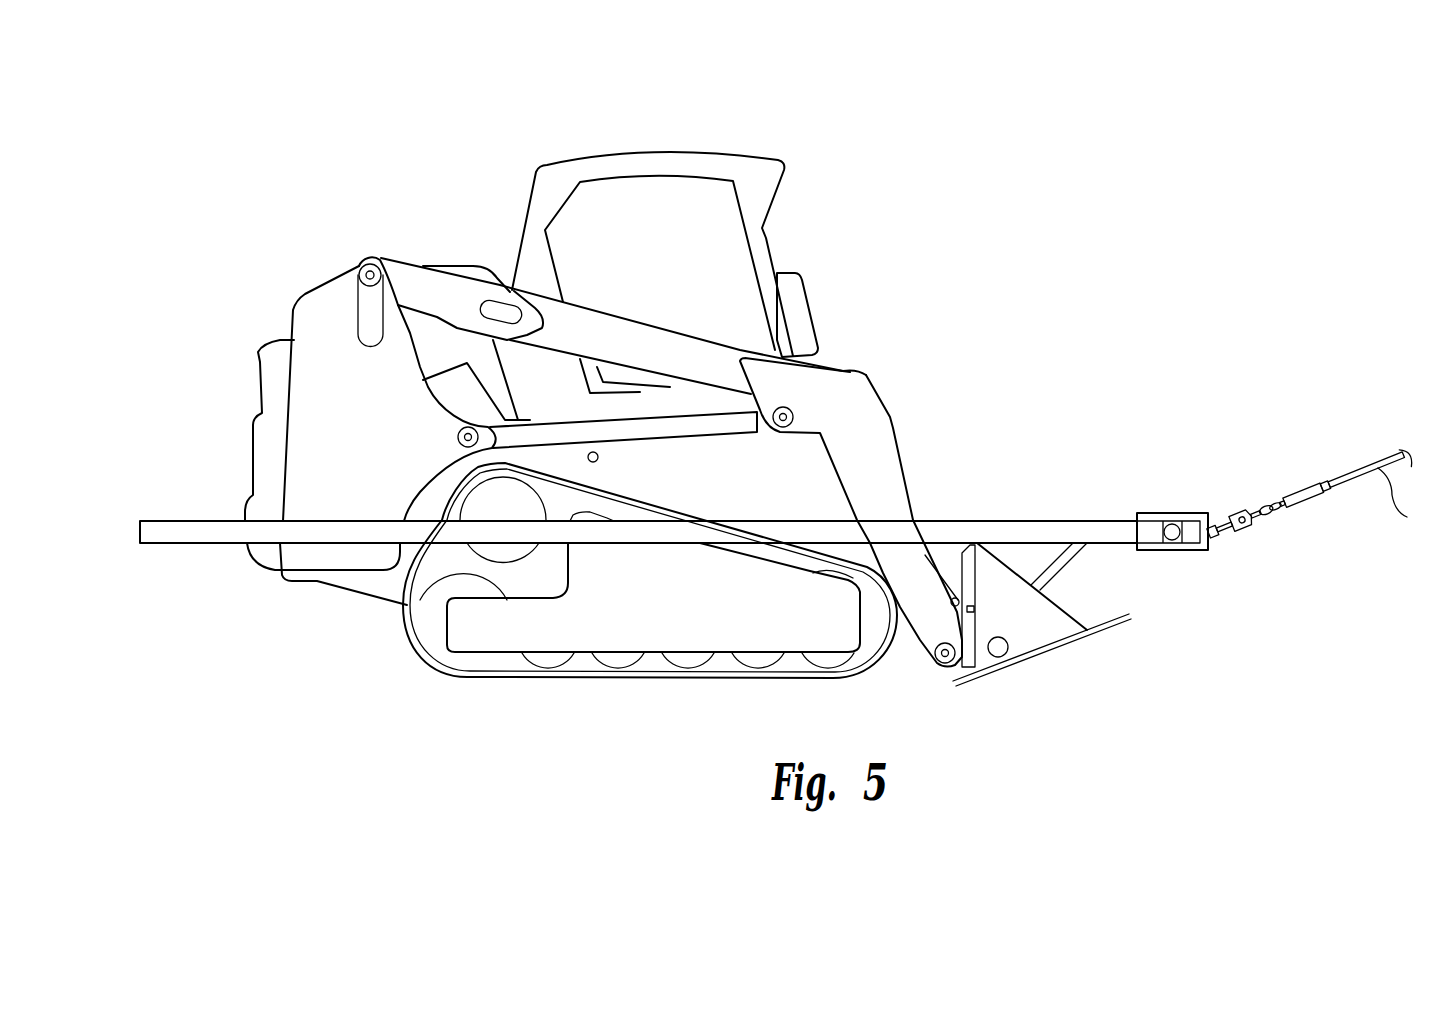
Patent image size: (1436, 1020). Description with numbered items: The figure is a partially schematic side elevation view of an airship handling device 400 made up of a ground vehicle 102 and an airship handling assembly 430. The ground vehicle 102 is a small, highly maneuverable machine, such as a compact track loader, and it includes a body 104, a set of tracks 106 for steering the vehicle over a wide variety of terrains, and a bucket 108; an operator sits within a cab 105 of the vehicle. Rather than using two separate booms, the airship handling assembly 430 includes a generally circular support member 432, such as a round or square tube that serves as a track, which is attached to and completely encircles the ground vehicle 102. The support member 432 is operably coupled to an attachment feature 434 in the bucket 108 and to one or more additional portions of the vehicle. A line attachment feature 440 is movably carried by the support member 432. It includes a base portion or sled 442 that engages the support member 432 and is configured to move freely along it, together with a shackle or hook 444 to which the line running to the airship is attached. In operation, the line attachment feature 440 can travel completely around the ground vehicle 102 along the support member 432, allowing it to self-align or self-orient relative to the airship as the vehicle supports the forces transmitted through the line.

The airship handling device 400 is at (1141, 122).
The ground vehicle 102 is at (262, 306).
The body 104 is at (312, 432).
The cab 105 is at (782, 195).
The set of tracks 106 is at (627, 673).
The bucket 108 is at (1047, 627).
The airship handling assembly 430 is at (1067, 484).
The support member 432 is at (975, 525).
The attachment feature 434 is at (1055, 562).
The line attachment feature 440 is at (1241, 487).
The sled 442 is at (1167, 551).
The hook 444 is at (1213, 532).